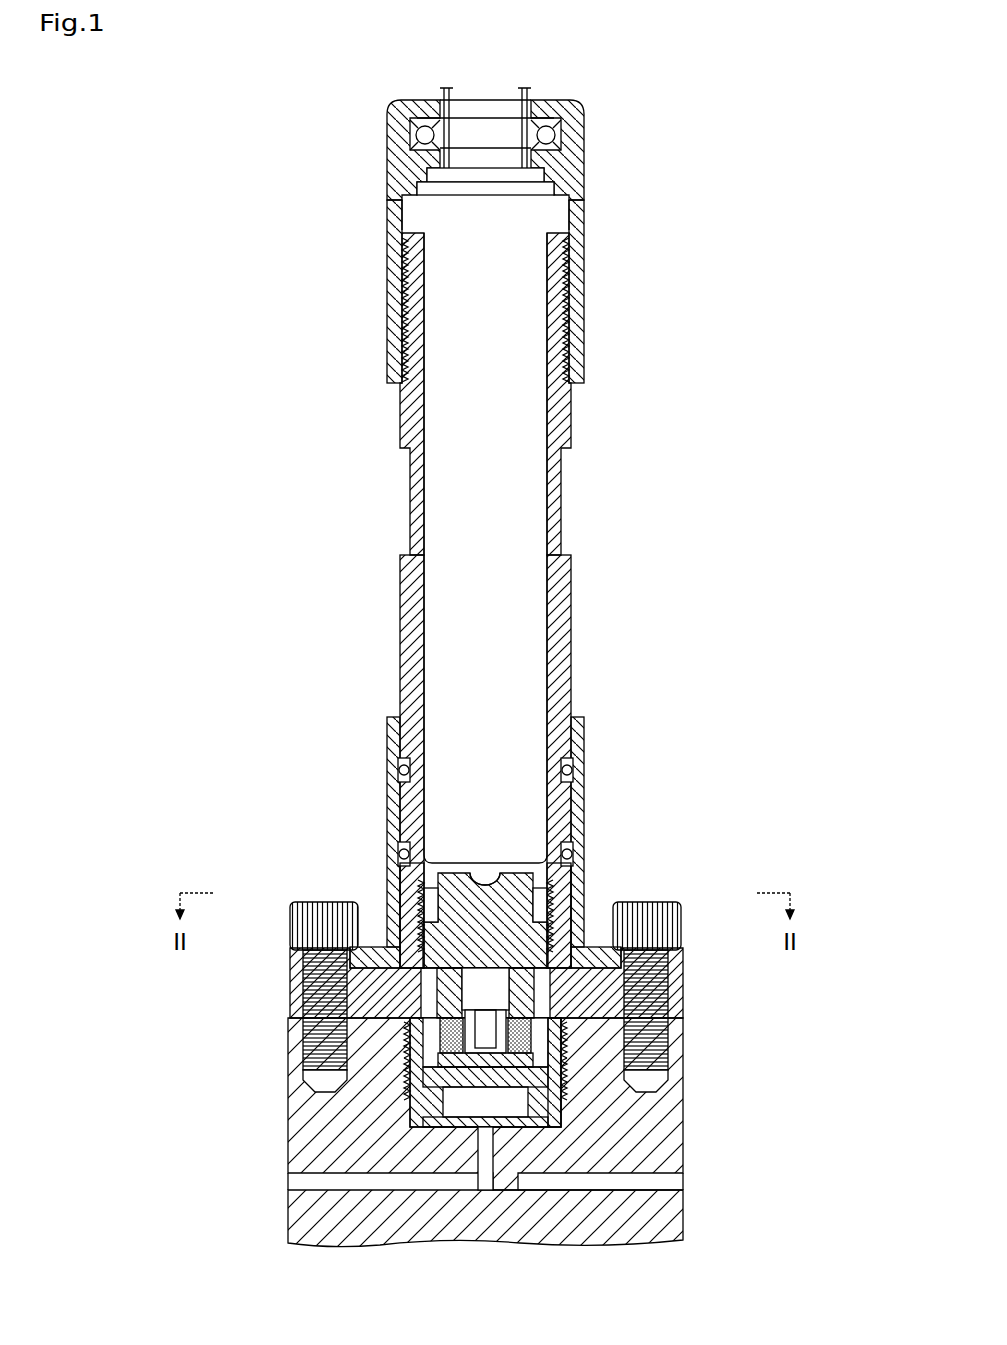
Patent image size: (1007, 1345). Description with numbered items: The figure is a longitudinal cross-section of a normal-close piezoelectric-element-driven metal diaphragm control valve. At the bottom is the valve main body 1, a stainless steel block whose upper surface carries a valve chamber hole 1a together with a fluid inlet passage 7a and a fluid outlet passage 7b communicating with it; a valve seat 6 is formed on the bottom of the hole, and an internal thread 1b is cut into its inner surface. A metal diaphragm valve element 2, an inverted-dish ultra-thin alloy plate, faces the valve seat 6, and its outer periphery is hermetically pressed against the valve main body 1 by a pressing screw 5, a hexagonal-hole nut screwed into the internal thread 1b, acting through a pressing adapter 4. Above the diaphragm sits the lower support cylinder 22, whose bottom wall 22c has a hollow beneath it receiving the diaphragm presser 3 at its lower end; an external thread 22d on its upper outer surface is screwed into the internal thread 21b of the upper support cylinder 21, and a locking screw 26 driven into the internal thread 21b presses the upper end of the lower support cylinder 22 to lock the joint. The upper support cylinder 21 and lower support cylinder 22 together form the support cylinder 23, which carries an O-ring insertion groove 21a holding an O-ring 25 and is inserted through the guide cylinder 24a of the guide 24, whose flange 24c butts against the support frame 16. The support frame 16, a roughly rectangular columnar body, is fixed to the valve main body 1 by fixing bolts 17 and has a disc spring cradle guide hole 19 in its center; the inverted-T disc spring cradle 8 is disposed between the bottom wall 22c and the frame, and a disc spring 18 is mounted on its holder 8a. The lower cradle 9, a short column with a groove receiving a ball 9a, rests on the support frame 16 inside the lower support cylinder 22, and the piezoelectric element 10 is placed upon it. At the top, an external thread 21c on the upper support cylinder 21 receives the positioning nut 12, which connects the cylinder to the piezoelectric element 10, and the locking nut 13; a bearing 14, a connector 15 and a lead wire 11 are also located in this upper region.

The valve main body 1 is at (572, 1077).
The valve chamber hole 1a is at (420, 1100).
The internal thread 1b is at (400, 1023).
The metal diaphragm valve element 2 is at (422, 1128).
The diaphragm presser 3 is at (518, 1105).
The pressing adapter 4 is at (560, 1122).
The pressing screw 5 is at (540, 1082).
The valve seat 6 is at (478, 1130).
The fluid inlet passage 7a is at (325, 1183).
The fluid outlet passage 7b is at (640, 1183).
The disc spring cradle 8 is at (500, 1062).
The holder 8a is at (485, 1030).
The lower cradle 9 is at (512, 890).
The ball 9a is at (490, 862).
The piezoelectric element 10 is at (470, 512).
The lead wire 11 is at (528, 96).
The positioning nut 12 is at (568, 175).
The locking nut 13 is at (577, 330).
The bearing 14 is at (550, 138).
The connector 15 is at (487, 175).
The support frame 16 is at (668, 1000).
The fixing bolt 17 is at (655, 925).
The disc spring 18 is at (545, 1093).
The disc spring cradle guide hole 19 is at (473, 968).
The upper support cylinder 21 is at (567, 432).
The O-ring insertion groove 21a is at (562, 778).
The internal thread 21b is at (418, 886).
The external thread 21c is at (566, 252).
The lower support cylinder 22 is at (410, 1070).
The bottom wall 22c is at (445, 1110).
The external thread 22d is at (425, 920).
The support cylinder 23 is at (574, 608).
The guide 24 is at (585, 813).
The guide cylinder 24a is at (393, 800).
The flange 24c is at (668, 963).
The O-ring 25 is at (568, 770).
The locking screw 26 is at (549, 898).